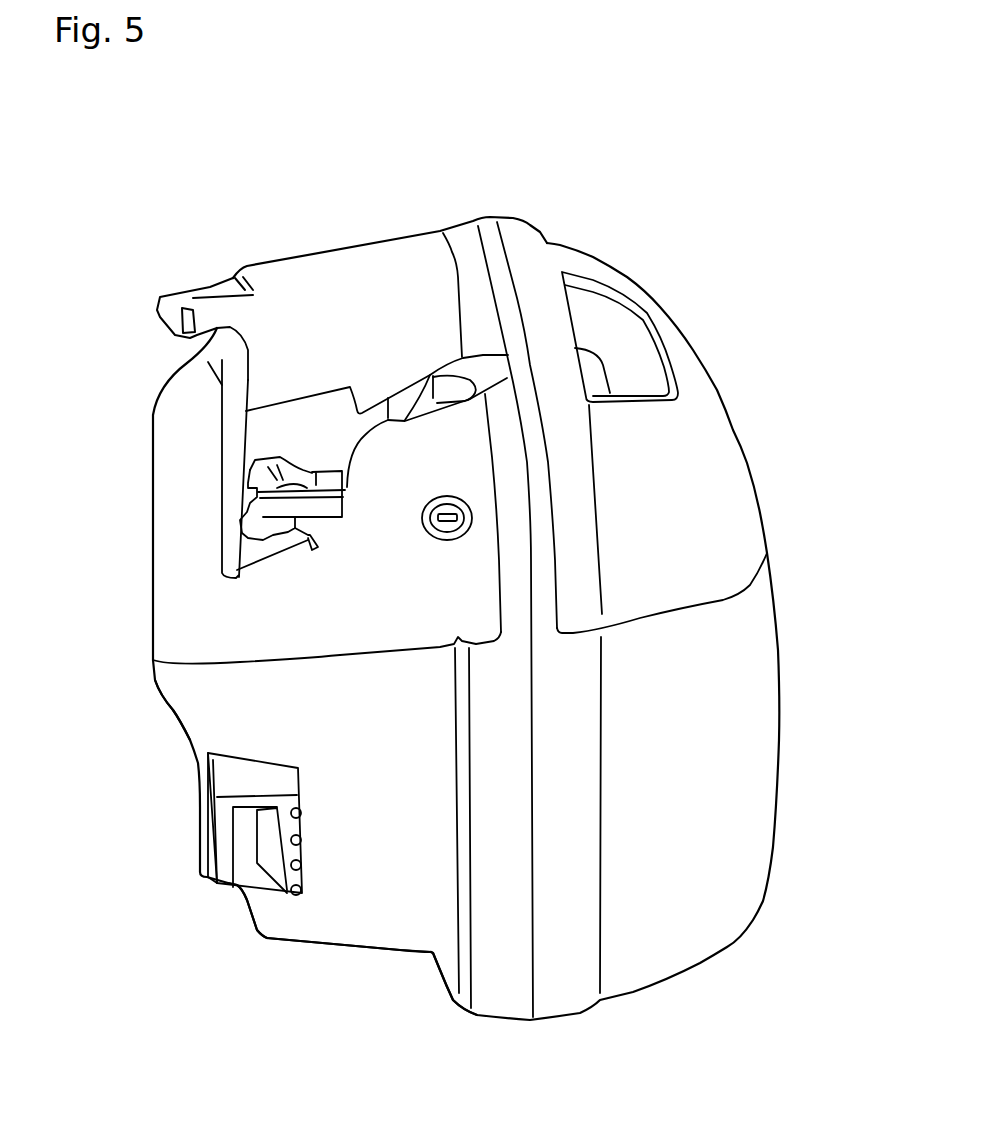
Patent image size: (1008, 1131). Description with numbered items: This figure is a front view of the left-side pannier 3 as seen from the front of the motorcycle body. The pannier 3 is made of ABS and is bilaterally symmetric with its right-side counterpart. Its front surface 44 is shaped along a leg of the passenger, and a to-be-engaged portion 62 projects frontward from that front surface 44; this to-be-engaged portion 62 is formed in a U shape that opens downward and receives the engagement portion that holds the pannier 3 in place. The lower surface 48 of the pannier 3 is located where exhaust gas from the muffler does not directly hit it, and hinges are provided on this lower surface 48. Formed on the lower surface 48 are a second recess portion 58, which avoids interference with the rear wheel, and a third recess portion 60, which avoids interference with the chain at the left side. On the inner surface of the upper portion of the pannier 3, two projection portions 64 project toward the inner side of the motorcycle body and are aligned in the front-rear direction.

The pannier 3 is at (580, 206).
The front surface 44 is at (403, 880).
The lower surface 48 is at (358, 948).
The second recess portion 58 is at (173, 712).
The third recess portion 60 is at (247, 903).
The to-be-engaged portion 62 is at (273, 857).
The projection portions 64 is at (303, 486).